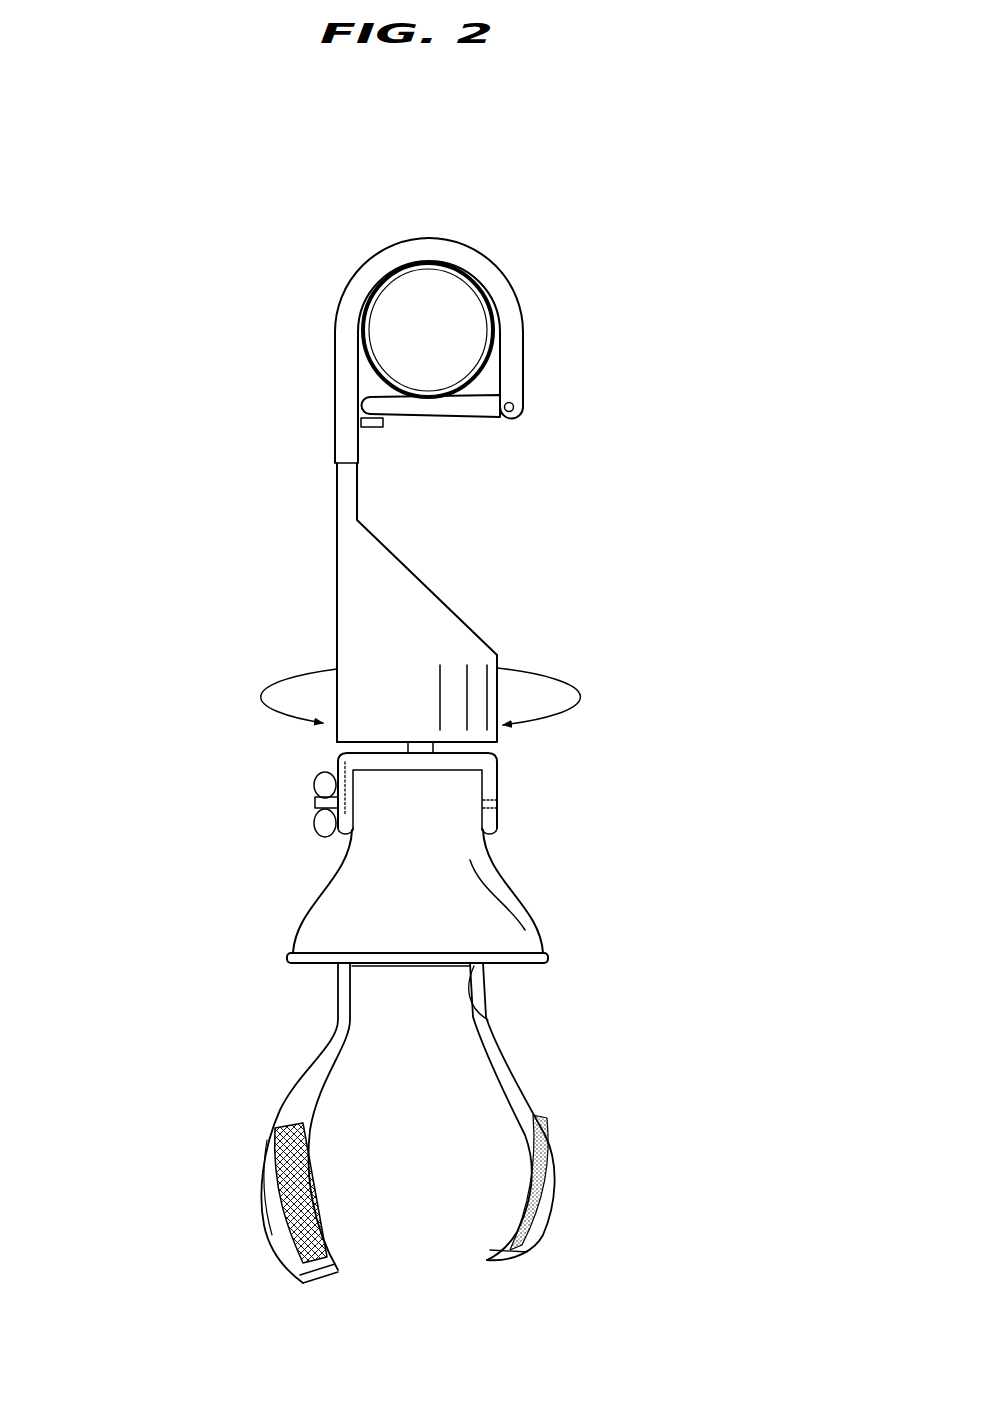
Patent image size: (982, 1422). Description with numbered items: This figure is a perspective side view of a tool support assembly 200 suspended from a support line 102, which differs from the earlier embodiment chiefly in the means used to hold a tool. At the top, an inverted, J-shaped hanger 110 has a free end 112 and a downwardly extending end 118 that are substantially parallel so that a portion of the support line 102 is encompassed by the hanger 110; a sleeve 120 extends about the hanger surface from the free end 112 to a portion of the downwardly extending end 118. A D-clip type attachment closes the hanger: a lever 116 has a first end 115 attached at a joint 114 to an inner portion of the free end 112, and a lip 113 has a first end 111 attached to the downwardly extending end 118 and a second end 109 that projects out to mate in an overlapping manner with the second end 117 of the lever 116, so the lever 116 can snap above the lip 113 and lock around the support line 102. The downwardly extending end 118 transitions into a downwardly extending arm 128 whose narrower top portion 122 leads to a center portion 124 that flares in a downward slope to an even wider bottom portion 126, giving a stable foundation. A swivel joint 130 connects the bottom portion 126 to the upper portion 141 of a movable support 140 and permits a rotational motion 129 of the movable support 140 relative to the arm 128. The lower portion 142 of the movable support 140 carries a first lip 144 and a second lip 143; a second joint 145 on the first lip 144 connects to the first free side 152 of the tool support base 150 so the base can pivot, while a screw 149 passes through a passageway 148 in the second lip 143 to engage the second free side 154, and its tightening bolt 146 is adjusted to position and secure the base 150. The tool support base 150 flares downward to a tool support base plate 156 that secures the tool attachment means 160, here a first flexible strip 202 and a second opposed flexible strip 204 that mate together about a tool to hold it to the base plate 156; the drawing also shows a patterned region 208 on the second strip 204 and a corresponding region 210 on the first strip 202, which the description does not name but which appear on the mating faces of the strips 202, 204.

The tool support assembly 200 is at (180, 593).
The inverted, J-shaped hanger 110 is at (430, 240).
The support line 102 is at (452, 295).
The second end of the lever 117 is at (392, 407).
The free end 112 is at (518, 393).
The joint 114 is at (512, 420).
The first end of the lever 115 is at (483, 418).
The lever 116 is at (463, 420).
The first end of the lip 111 is at (363, 428).
The second end of the lip 109 is at (373, 424).
The lip 113 is at (373, 425).
The downwardly extending end 118 is at (336, 452).
The sleeve 120 is at (337, 470).
The top portion 122 is at (336, 503).
The downwardly extending arm 128 is at (337, 637).
The center portion 124 is at (443, 597).
The bottom portion 126 is at (495, 694).
The rotational motion 129 is at (270, 680).
The joint 130 is at (416, 748).
The movable support 140 is at (358, 760).
The upper portion 141 is at (486, 757).
The second lip 143 is at (338, 758).
The passageway 148 is at (337, 753).
The first lip 144 is at (494, 782).
The second joint 145 is at (490, 804).
The lower portion 142 is at (488, 832).
The tightening bolt 146 is at (317, 810).
The screw 149 is at (340, 850).
The tool support base 150 is at (497, 870).
The first free side 152 is at (547, 942).
The second free side 154 is at (292, 952).
The tool support base plate 156 is at (297, 963).
The tool attachment means 160 is at (487, 970).
The second opposed flexible strip 204 is at (277, 1122).
The mesh pad 208 is at (292, 1162).
The first flexible strip 202 is at (545, 1115).
The friction pad 210 is at (527, 1218).